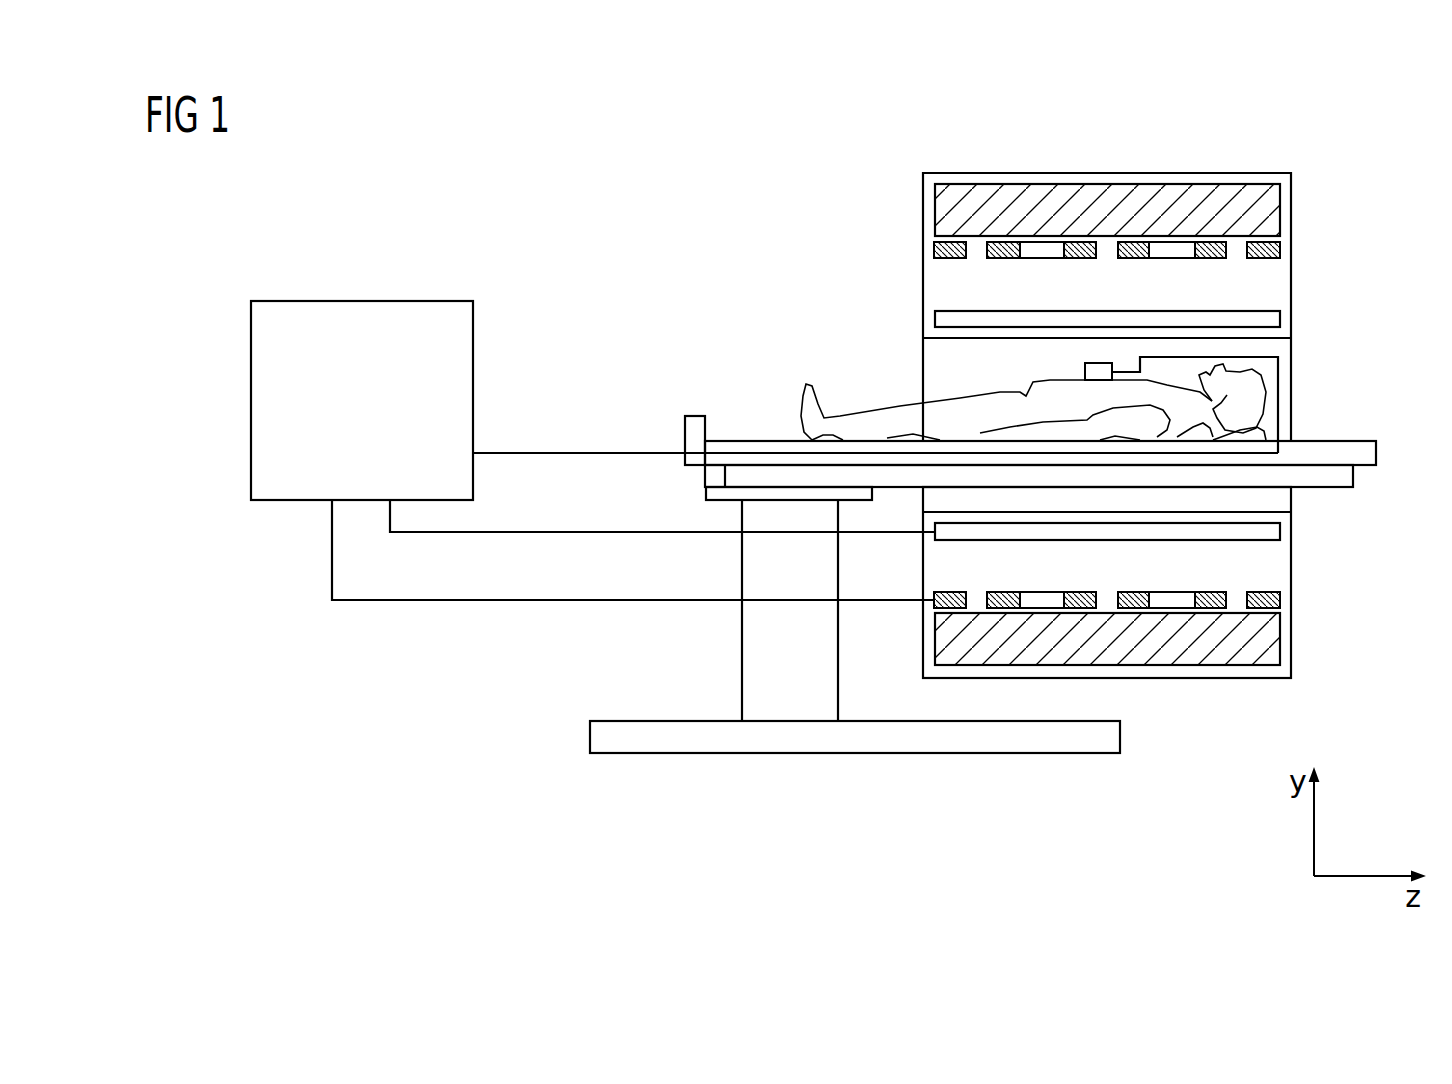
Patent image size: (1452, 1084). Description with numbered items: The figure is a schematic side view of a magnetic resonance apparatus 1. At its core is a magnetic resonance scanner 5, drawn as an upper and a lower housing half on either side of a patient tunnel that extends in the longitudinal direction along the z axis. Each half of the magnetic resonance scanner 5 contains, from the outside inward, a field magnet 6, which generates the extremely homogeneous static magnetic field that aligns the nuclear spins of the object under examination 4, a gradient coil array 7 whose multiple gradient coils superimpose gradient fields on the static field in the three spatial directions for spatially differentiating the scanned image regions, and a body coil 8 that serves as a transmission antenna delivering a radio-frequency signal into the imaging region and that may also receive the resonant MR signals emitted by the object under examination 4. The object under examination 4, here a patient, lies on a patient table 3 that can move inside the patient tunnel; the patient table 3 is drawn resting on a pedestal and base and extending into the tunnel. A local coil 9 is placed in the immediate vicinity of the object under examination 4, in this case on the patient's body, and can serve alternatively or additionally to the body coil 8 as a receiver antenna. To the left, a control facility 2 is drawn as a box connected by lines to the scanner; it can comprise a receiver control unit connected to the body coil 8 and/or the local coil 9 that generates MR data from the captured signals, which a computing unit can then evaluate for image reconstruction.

The magnetic resonance apparatus 1 is at (423, 679).
The control facility 2 is at (351, 419).
The patient table 3 is at (742, 657).
The object under examination 4 is at (875, 426).
The magnetic resonance scanner 5 is at (921, 254).
The field magnet 6 is at (1035, 207).
The gradient coil array 7 is at (1170, 248).
The body coil 8 is at (1270, 321).
The local coil 9 is at (1083, 372).